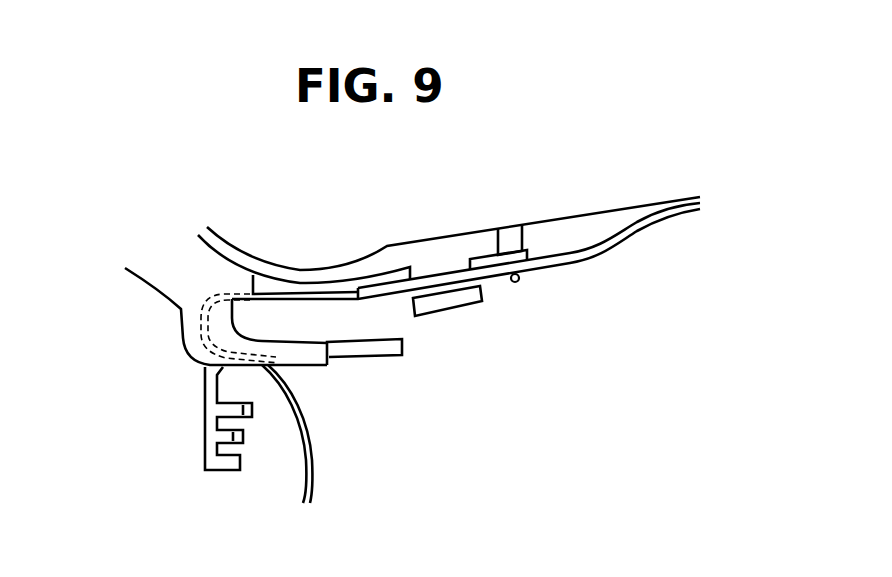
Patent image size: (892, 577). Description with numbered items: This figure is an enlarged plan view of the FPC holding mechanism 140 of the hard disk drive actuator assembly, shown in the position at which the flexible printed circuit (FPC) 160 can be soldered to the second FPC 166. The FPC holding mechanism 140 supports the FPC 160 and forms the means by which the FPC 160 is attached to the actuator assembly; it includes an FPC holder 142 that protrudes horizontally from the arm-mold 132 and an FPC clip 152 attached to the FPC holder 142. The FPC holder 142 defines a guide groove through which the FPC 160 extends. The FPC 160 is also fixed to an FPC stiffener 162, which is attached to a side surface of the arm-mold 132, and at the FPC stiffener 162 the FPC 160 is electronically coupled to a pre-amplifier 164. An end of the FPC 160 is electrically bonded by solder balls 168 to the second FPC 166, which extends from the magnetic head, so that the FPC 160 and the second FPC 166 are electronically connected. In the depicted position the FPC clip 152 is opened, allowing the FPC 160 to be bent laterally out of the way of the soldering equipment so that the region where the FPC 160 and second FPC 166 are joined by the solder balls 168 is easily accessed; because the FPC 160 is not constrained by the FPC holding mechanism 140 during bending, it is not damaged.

The arm-mold 132 is at (168, 276).
The FPC holding mechanism 140 is at (178, 357).
The FPC holder 142 is at (318, 357).
The FPC clip 152 is at (198, 451).
The flexible printed circuit (FPC) 160 is at (317, 465).
The FPC stiffener 162 is at (498, 257).
The pre-amplifier 164 is at (449, 303).
The second FPC 166 is at (604, 248).
The solder balls 168 is at (517, 283).